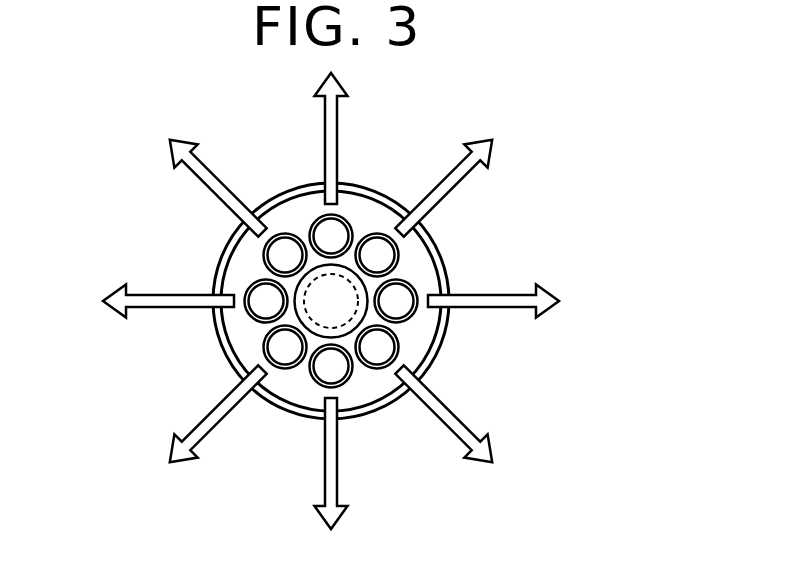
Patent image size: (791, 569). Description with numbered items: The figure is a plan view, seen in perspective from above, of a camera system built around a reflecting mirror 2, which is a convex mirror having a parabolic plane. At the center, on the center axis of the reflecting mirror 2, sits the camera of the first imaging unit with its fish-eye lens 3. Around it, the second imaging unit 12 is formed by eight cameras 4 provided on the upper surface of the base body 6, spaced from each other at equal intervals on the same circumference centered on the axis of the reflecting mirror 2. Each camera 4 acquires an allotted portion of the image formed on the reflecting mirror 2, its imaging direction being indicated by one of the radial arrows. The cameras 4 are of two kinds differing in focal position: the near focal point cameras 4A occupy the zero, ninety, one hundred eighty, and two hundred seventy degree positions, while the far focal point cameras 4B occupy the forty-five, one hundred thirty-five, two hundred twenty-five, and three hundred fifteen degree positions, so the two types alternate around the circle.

The reflecting mirror 2 is at (331, 301).
The fish-eye lens 3 is at (305, 310).
The cameras 4 is at (330, 305).
The cameras of near focal point type 4A is at (318, 225).
The cameras of far focal point type 4B is at (378, 243).
The base body 6 is at (355, 187).
The second imaging unit 12 is at (410, 335).